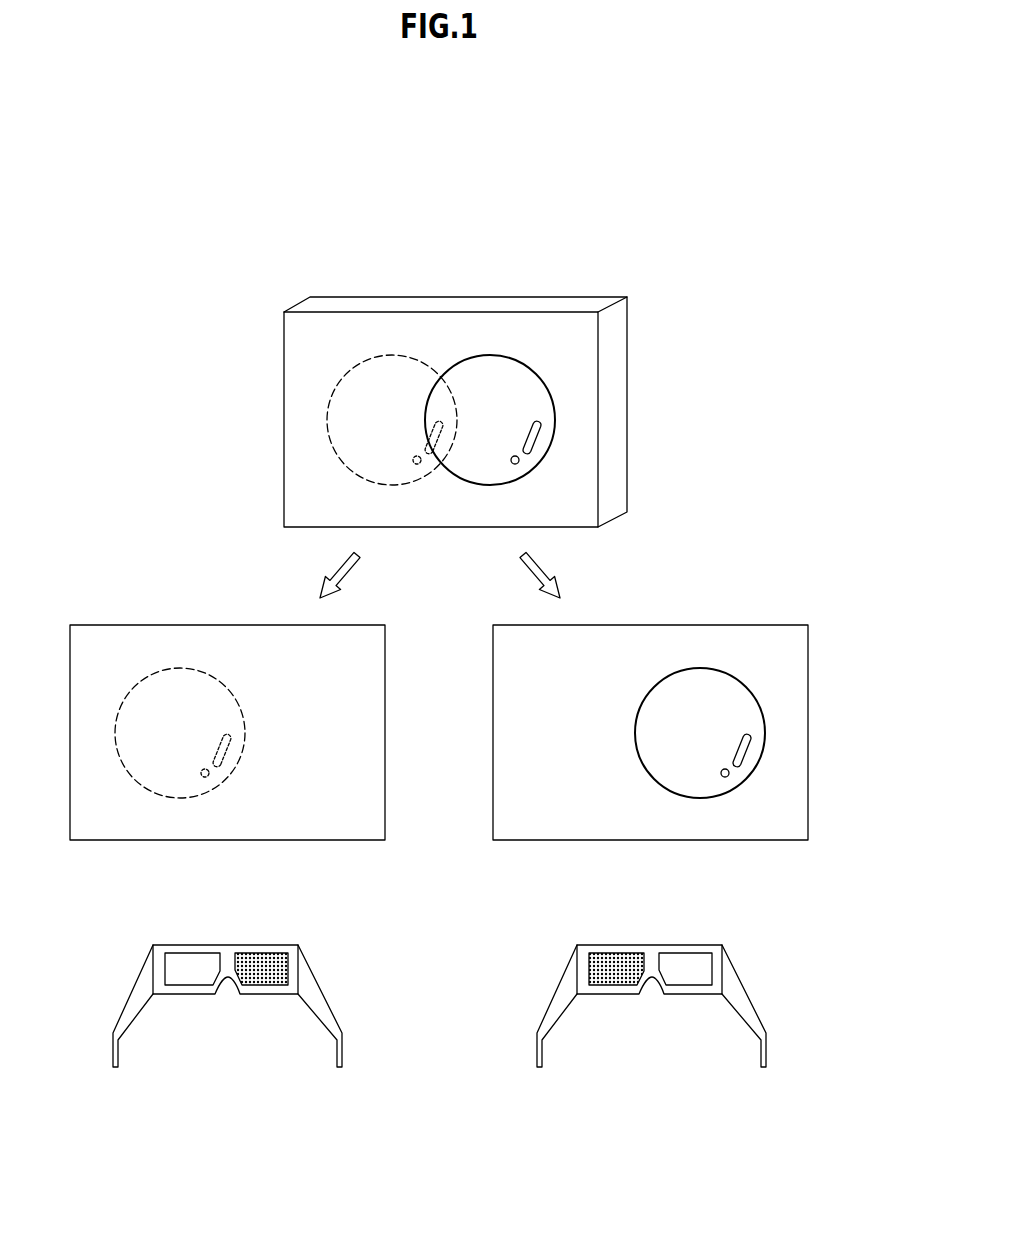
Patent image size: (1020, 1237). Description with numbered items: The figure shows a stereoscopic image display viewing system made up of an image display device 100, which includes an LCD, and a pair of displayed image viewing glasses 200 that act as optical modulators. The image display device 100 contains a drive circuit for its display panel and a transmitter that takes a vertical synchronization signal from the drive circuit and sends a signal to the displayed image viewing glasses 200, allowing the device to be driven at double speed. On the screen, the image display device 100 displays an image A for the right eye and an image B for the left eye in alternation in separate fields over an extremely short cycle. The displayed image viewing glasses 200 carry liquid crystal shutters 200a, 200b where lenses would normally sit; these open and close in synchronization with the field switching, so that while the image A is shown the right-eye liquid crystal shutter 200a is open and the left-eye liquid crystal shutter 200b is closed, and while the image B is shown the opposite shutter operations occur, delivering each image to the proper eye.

The image display device 100 is at (619, 353).
The displayed image viewing glasses 200 is at (297, 928).
The liquid crystal shutter for the right eye 200a is at (270, 980).
The liquid crystal shutter for the left eye 200b is at (188, 973).
The image for the right eye A is at (703, 630).
The image for the left eye B is at (177, 630).